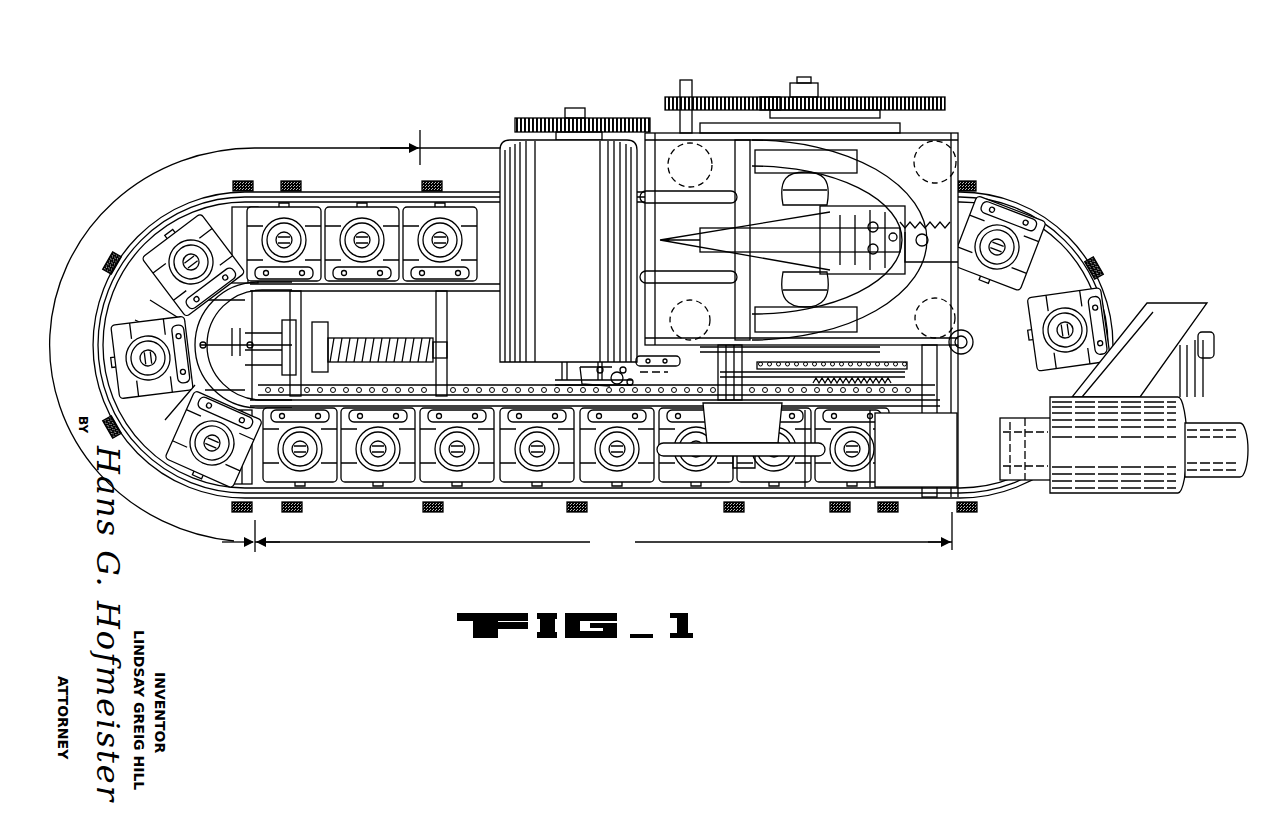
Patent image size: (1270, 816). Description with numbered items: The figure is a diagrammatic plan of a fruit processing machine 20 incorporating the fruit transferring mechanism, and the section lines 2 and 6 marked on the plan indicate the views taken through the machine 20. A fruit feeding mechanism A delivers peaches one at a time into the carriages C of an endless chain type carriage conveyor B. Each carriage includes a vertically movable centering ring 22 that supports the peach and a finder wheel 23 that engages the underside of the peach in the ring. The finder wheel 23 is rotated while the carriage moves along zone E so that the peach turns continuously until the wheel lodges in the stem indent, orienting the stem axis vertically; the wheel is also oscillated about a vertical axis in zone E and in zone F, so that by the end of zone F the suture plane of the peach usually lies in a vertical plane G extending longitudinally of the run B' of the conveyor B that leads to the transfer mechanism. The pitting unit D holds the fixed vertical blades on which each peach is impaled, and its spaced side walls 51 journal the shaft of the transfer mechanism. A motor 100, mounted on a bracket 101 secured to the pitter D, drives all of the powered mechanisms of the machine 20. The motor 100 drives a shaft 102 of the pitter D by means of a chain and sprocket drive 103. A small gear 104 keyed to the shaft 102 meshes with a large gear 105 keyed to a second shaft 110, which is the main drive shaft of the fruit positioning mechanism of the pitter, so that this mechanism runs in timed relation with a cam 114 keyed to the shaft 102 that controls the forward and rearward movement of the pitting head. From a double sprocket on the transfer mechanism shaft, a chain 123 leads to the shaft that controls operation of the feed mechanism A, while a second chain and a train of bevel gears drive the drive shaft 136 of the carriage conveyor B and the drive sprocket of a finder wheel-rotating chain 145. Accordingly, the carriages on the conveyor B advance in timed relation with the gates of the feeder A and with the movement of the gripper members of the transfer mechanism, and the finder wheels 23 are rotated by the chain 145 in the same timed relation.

The machine 20 is at (283, 108).
The carriage block 2 is at (470, 381).
The drive rack assembly 6 is at (738, 316).
The centering ring 22 is at (375, 214).
The finder wheel 23 is at (287, 238).
The side walls 51 is at (925, 137).
The motor 100 is at (590, 177).
The bracket 101 is at (502, 141).
The shaft 102 is at (750, 172).
The chain and sprocket drive 103 is at (612, 372).
The small gear 104 is at (728, 99).
The large gear 105 is at (880, 96).
The second shaft 110 is at (803, 78).
The cam 114 is at (722, 244).
The chain 123 is at (930, 381).
The drive shaft 136 is at (964, 345).
The finder wheel-rotating chain 145 is at (660, 357).
The fruit feeding mechanism A is at (995, 497).
The carriage conveyor B is at (185, 418).
The run B' is at (424, 127).
The carriages C is at (257, 230).
The pitting unit D is at (969, 176).
The zone E is at (587, 535).
The zone F is at (271, 344).
The vertical plane G is at (656, 236).